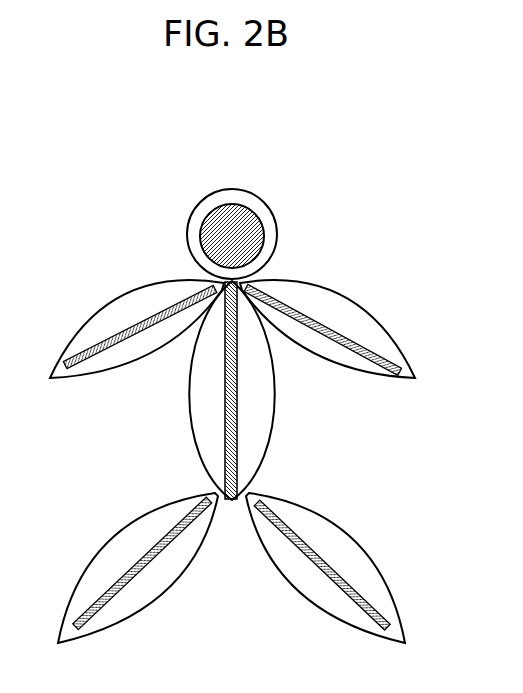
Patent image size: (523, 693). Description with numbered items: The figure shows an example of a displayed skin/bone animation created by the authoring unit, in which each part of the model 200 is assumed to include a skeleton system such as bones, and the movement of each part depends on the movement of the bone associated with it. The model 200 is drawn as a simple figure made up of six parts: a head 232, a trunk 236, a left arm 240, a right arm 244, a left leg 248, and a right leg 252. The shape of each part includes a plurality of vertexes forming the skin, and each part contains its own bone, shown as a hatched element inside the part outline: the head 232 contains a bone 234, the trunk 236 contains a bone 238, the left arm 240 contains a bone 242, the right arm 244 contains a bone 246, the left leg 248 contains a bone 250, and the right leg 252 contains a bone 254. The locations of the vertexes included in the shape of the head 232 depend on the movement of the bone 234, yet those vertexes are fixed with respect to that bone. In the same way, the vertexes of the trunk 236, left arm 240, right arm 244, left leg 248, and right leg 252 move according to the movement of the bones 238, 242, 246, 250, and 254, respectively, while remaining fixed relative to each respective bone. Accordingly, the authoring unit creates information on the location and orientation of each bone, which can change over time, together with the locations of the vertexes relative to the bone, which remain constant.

The model 200 is at (370, 210).
The head 232 is at (263, 209).
The bone 234 is at (232, 208).
The trunk 236 is at (267, 405).
The bone 238 is at (249, 441).
The left arm 240 is at (147, 305).
The bone 242 is at (100, 340).
The right arm 244 is at (318, 305).
The bone 246 is at (360, 345).
The left leg 248 is at (148, 530).
The bone 250 is at (122, 575).
The right leg 252 is at (313, 532).
The bone 254 is at (338, 578).